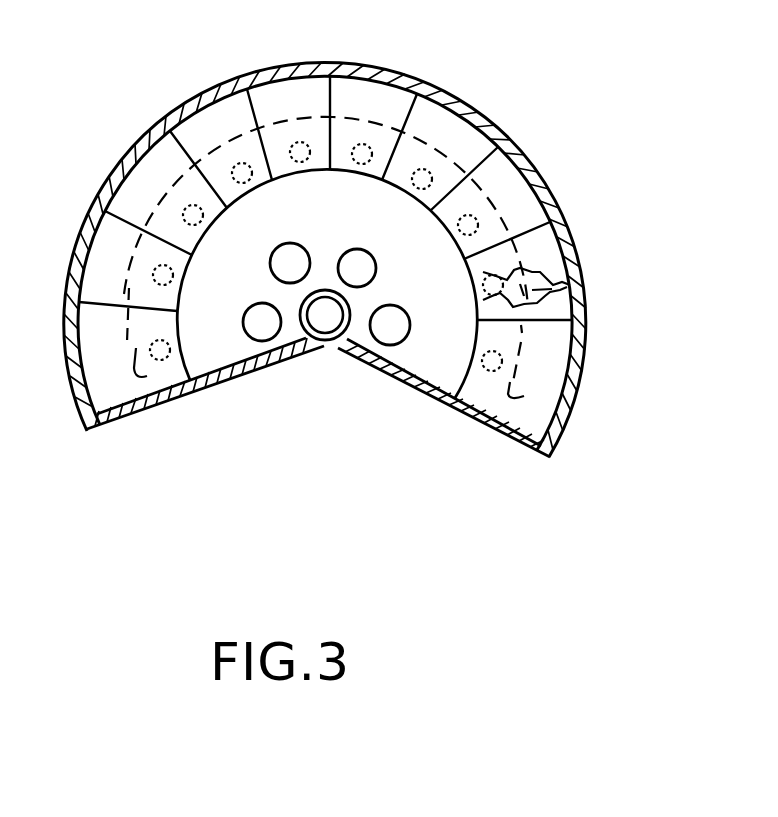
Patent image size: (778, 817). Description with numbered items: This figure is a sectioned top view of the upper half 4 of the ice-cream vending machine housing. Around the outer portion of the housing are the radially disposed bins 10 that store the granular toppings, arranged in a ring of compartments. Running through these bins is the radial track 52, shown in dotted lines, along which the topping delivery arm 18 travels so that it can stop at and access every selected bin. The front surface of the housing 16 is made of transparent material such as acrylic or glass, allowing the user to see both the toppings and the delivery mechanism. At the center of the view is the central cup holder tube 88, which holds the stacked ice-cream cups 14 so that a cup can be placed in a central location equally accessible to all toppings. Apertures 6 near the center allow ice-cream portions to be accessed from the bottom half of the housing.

The upper half 4 is at (557, 187).
The granular toppings bins 10 is at (368, 104).
The topping delivery arm 18 is at (550, 272).
The radial track 52 is at (528, 357).
The aperture 6 is at (260, 324).
The stacked ice-cream cups 14 is at (297, 403).
The central cup holder tube 88 is at (335, 345).
The front surface of the housing 16 is at (413, 385).